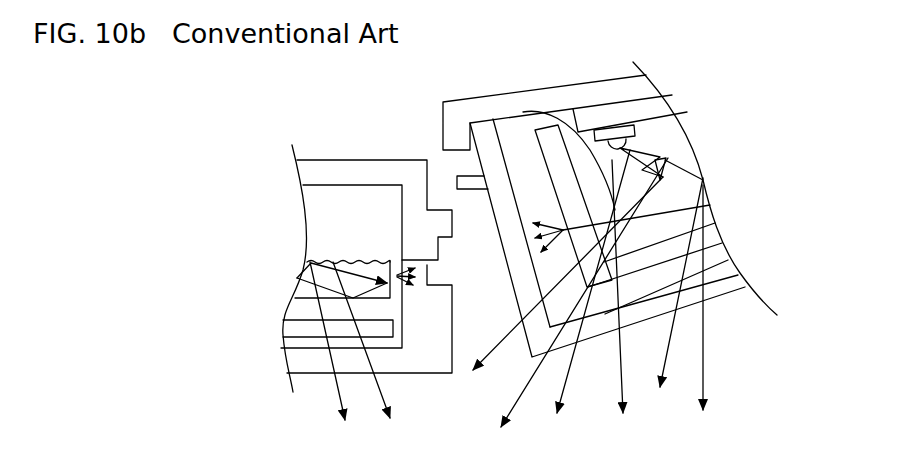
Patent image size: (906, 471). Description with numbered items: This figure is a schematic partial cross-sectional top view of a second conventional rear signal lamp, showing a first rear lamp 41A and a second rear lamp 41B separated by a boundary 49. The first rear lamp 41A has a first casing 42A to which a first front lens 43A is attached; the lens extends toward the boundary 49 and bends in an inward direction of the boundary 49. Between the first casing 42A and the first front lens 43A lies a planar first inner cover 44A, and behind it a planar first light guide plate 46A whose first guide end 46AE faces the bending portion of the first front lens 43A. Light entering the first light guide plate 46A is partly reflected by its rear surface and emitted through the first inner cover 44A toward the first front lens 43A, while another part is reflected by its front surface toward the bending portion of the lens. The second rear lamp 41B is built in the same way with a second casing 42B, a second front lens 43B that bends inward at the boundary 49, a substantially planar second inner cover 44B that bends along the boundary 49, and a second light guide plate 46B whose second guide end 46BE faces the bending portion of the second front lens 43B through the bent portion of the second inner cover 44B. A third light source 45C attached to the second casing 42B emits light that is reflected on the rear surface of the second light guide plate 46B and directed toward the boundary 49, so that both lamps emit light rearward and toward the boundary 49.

The first rear lamp 41A is at (380, 125).
The second rear lamp 41B is at (420, 106).
The first casing 42A is at (327, 175).
The second casing 42B is at (463, 110).
The first front lens 43A is at (418, 360).
The second front lens 43B is at (717, 287).
The first inner cover 44A is at (310, 333).
The second inner cover 44B is at (712, 238).
The third light source 45C is at (617, 130).
The first light guide plate 46A is at (297, 293).
The first guide end 46AE is at (387, 272).
The second light guide plate 46B is at (662, 207).
The second guide end 46BE is at (523, 112).
The boundary 49 is at (468, 342).